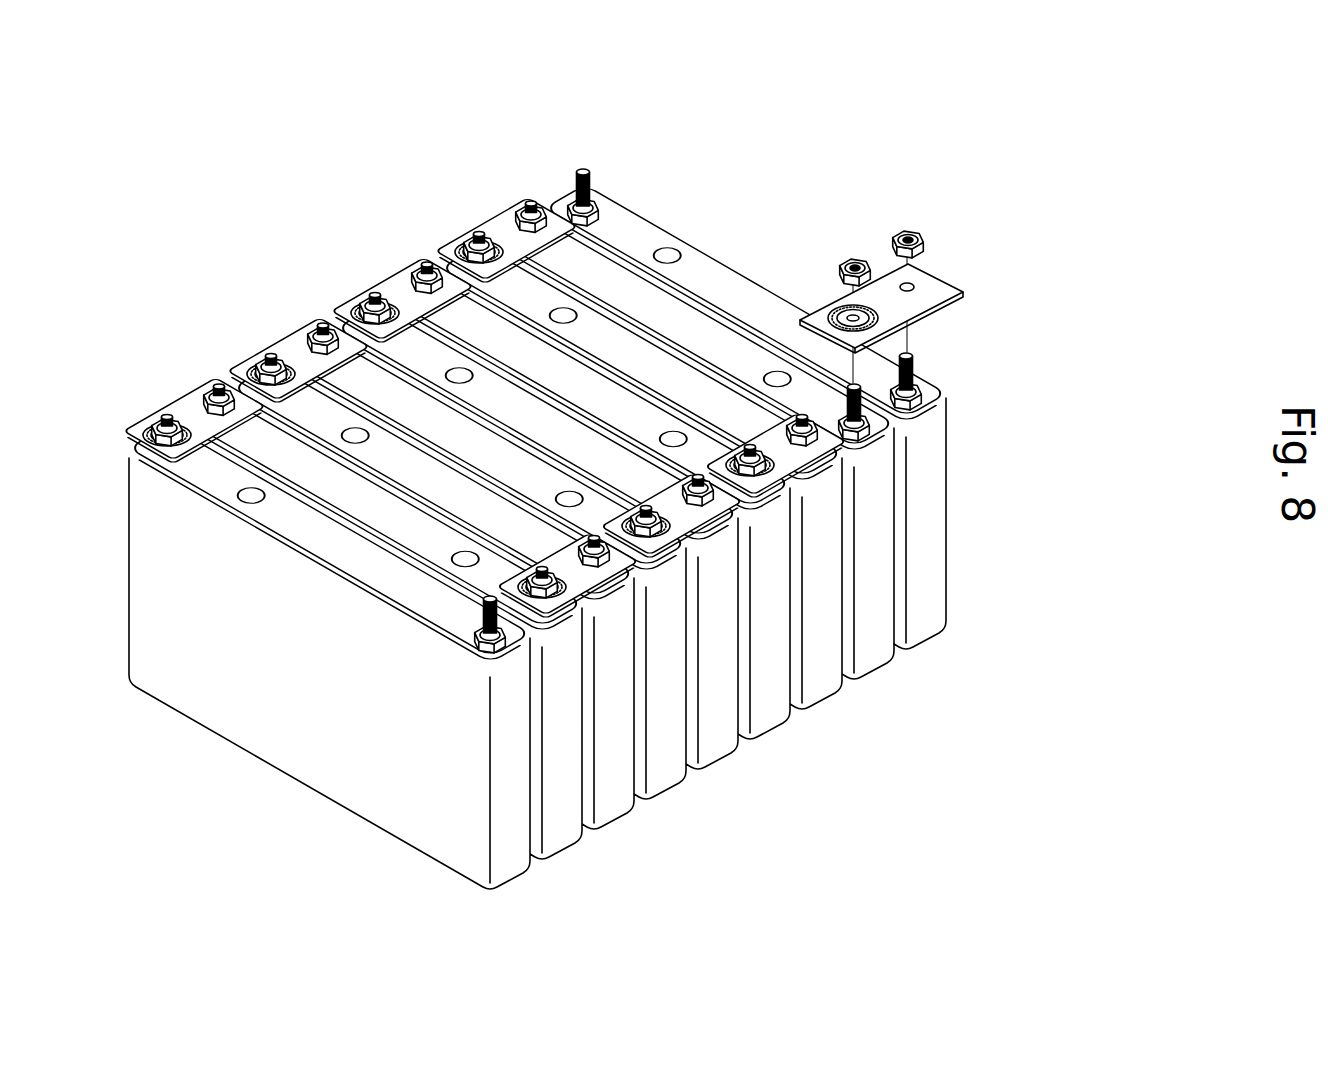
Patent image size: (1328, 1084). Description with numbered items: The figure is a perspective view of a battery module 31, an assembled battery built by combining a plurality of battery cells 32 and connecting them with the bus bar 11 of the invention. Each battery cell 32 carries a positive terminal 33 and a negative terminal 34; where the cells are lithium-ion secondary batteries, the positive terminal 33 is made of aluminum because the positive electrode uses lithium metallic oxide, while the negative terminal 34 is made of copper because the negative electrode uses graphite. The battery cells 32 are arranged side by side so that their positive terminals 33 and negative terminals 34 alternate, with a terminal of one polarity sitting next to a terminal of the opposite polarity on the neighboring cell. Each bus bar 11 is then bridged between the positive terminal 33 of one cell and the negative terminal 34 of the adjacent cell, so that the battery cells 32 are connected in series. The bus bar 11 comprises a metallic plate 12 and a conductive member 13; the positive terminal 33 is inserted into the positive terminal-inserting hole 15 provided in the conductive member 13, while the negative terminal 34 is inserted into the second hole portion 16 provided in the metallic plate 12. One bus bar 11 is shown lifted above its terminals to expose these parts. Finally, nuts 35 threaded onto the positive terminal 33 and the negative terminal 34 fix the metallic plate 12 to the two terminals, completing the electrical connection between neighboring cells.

The bus bar 11 is at (893, 258).
The metallic plate 12 is at (917, 295).
The conductive member 13 is at (859, 288).
The positive terminal-inserting hole 15 is at (878, 312).
The second hole portion 16 is at (916, 288).
The battery module 31 is at (702, 190).
The battery cell 32 is at (937, 539).
The positive terminal 33 is at (585, 168).
The negative terminal 34 is at (531, 200).
The nut 35 is at (912, 226).